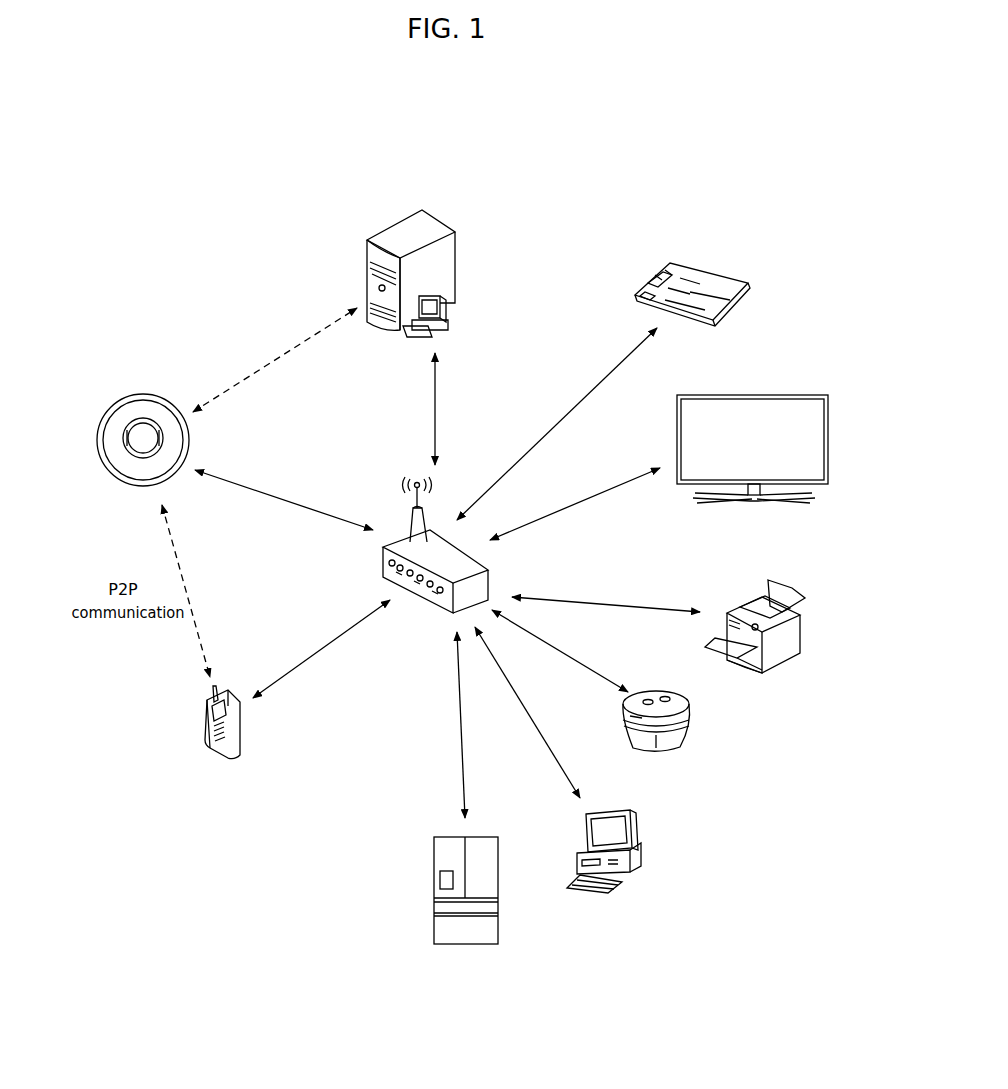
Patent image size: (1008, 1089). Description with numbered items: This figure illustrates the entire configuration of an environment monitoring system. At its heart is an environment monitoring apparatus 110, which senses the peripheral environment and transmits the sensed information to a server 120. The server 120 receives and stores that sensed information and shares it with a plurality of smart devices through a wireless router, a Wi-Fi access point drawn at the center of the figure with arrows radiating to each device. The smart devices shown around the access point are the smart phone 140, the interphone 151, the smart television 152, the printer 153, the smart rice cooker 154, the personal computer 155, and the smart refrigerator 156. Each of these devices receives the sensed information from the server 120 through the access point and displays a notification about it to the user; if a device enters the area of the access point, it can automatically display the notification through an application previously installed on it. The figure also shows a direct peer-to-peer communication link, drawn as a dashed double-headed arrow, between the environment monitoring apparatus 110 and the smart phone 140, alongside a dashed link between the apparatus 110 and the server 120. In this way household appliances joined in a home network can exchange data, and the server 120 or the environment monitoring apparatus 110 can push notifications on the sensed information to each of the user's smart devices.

The environment monitoring apparatus 110 is at (143, 470).
The server 120 is at (428, 222).
The smart phone 140 is at (237, 733).
The interphone 151 is at (718, 282).
The smart television 152 is at (770, 408).
The printer 153 is at (780, 655).
The smart rice cooker 154 is at (672, 737).
The personal computer 155 is at (632, 828).
The smart refrigerator 156 is at (490, 928).